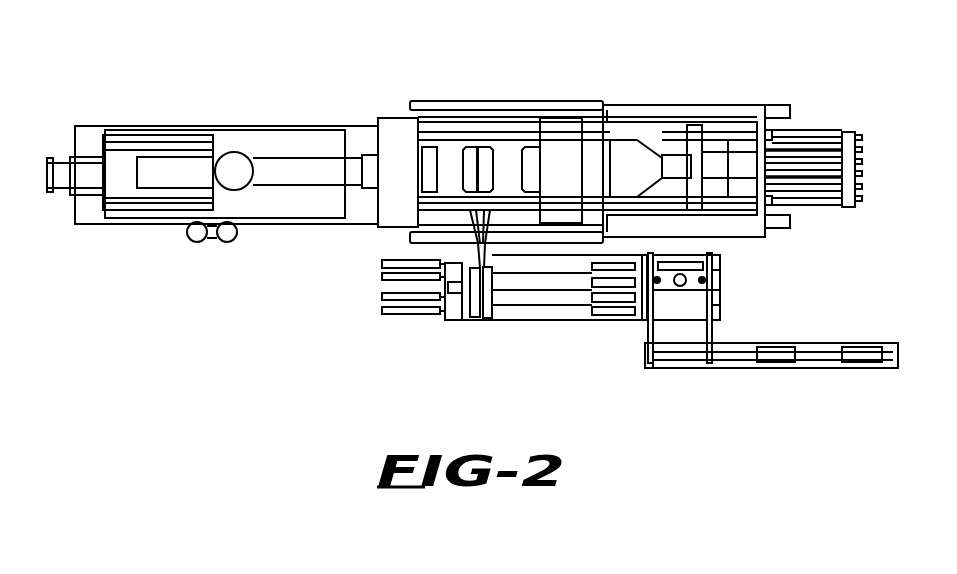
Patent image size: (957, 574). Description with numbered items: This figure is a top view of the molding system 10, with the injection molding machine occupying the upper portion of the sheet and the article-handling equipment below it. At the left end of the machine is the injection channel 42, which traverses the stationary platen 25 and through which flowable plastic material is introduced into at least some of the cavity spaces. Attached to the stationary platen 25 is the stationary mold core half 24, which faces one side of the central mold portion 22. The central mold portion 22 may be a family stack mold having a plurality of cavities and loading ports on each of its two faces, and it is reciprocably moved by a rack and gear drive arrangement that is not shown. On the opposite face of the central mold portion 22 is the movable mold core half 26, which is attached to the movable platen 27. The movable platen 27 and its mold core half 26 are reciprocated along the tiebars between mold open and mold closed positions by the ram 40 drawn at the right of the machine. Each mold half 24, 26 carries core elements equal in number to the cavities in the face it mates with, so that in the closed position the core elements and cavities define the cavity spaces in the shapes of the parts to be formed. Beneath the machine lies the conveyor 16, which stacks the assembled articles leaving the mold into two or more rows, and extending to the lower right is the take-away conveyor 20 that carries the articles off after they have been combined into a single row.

The molding system 10 is at (395, 90).
The injection channel 42 is at (292, 167).
The stationary platen 25 is at (414, 181).
The stationary mold core half 24 is at (423, 153).
The central mold portion 22 is at (468, 157).
The movable mold core half 26 is at (528, 153).
The movable platen 27 is at (576, 181).
The ram 40 is at (677, 160).
The conveyor 16 is at (548, 308).
The take-away conveyor 20 is at (815, 353).